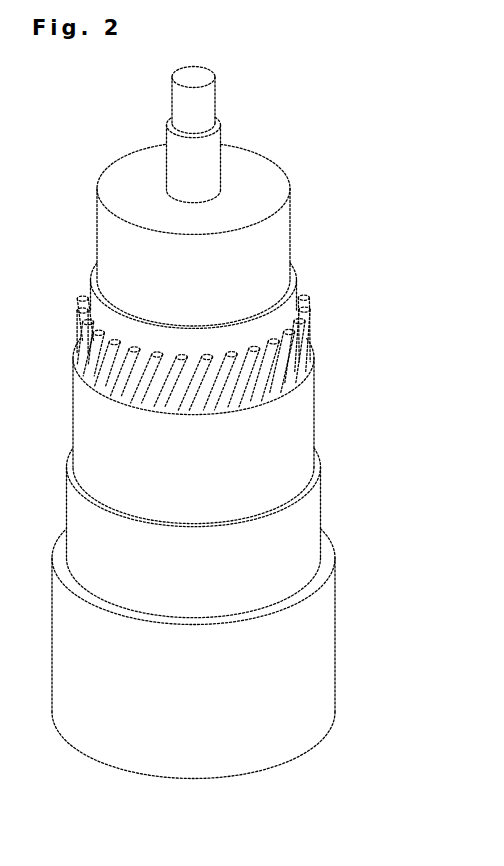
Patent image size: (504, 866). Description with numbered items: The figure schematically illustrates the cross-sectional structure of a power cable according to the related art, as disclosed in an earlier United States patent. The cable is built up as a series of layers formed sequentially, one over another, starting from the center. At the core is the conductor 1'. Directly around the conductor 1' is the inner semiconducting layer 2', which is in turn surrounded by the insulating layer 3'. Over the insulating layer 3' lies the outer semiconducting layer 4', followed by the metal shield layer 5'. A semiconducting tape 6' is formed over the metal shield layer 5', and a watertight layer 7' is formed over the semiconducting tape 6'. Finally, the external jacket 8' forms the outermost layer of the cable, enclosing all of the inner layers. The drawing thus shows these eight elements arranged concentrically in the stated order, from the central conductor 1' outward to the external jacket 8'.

The conductor 1' is at (231, 100).
The inner semiconducting layer 2' is at (254, 159).
The insulating layer 3' is at (235, 212).
The outer semiconducting layer 4' is at (243, 297).
The metal shield layer 5' is at (236, 352).
The semiconducting tape 6' is at (234, 403).
The watertight layer 7' is at (230, 503).
The external jacket 8' is at (223, 654).